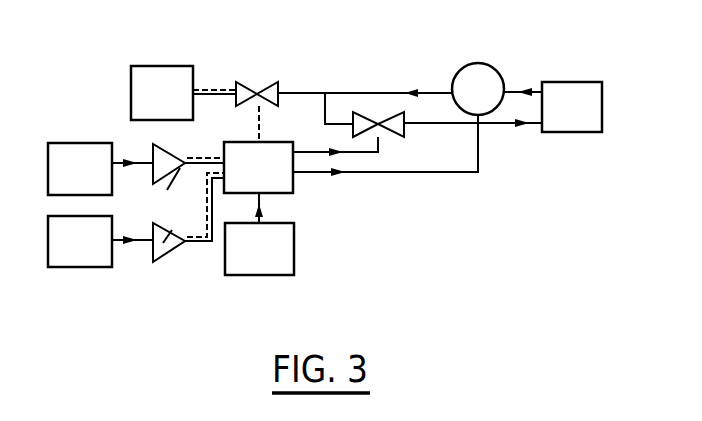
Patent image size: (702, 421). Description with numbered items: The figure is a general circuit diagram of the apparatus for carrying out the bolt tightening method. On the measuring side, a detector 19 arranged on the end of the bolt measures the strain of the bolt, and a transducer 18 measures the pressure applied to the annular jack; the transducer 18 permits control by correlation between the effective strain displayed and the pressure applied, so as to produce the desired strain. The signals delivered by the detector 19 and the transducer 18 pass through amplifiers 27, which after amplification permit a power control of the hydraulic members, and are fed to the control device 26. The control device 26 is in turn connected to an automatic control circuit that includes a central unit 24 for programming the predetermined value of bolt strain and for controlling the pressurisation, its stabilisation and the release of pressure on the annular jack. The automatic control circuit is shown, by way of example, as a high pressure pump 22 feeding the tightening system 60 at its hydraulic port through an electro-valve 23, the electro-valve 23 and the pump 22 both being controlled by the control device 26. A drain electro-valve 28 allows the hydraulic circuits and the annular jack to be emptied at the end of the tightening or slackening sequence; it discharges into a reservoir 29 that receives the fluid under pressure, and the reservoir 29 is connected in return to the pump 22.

The transducer 18 is at (80, 241).
The detector 19 is at (80, 169).
The high pressure pump 22 is at (478, 89).
The electro-valve 23 is at (263, 91).
The central unit 24 is at (259, 249).
The control device 26 is at (258, 167).
The amplifiers 27 is at (172, 230).
The drain electro-valve 28 is at (361, 121).
The reservoir 29 is at (572, 107).
The tightening system 60 is at (162, 93).